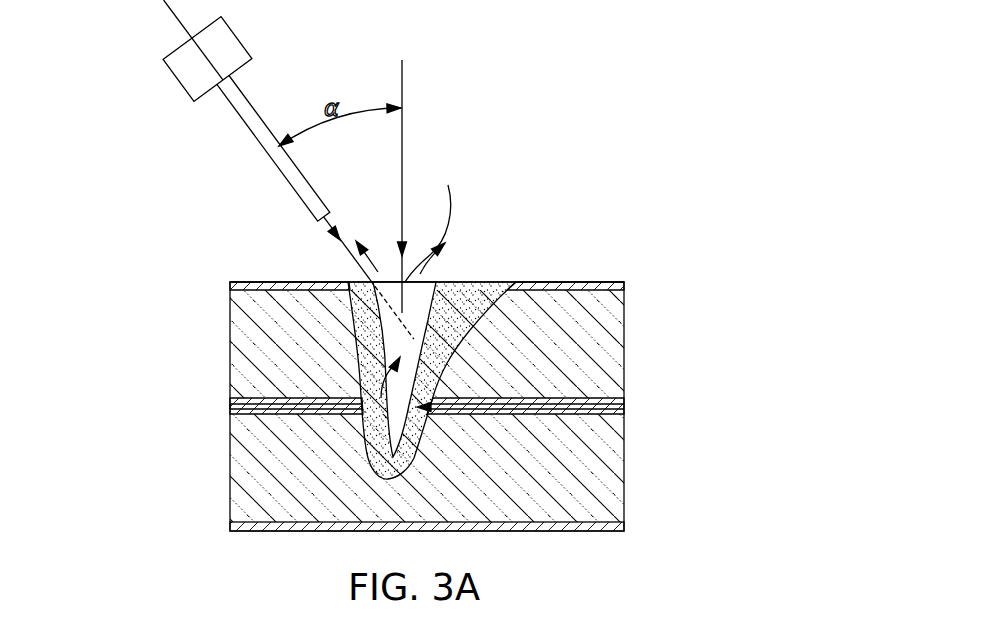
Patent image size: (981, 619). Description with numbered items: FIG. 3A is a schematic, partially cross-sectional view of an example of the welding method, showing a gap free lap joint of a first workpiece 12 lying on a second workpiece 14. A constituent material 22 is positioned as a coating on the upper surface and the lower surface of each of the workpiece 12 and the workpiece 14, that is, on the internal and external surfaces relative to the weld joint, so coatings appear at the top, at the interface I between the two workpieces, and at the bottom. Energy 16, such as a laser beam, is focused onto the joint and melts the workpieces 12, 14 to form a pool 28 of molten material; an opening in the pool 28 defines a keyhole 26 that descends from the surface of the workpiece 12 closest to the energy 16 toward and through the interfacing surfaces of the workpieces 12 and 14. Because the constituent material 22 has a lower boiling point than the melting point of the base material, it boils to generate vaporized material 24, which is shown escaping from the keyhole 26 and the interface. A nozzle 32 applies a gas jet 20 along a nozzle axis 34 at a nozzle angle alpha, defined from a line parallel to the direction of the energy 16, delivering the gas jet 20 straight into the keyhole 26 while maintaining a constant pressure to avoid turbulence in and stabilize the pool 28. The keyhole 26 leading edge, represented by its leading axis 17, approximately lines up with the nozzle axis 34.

The workpiece 12 is at (590, 328).
The workpiece 14 is at (594, 476).
The energy 16 is at (404, 160).
The leading axis 17 is at (356, 254).
The gas jet 20 is at (151, 50).
The constituent material 22 is at (599, 282).
The vaporized material 24 is at (378, 270).
The keyhole 26 is at (437, 219).
The pool 28 is at (510, 287).
The nozzle 32 is at (252, 97).
The nozzle axis 34 is at (173, 13).
The faying interface I is at (215, 405).